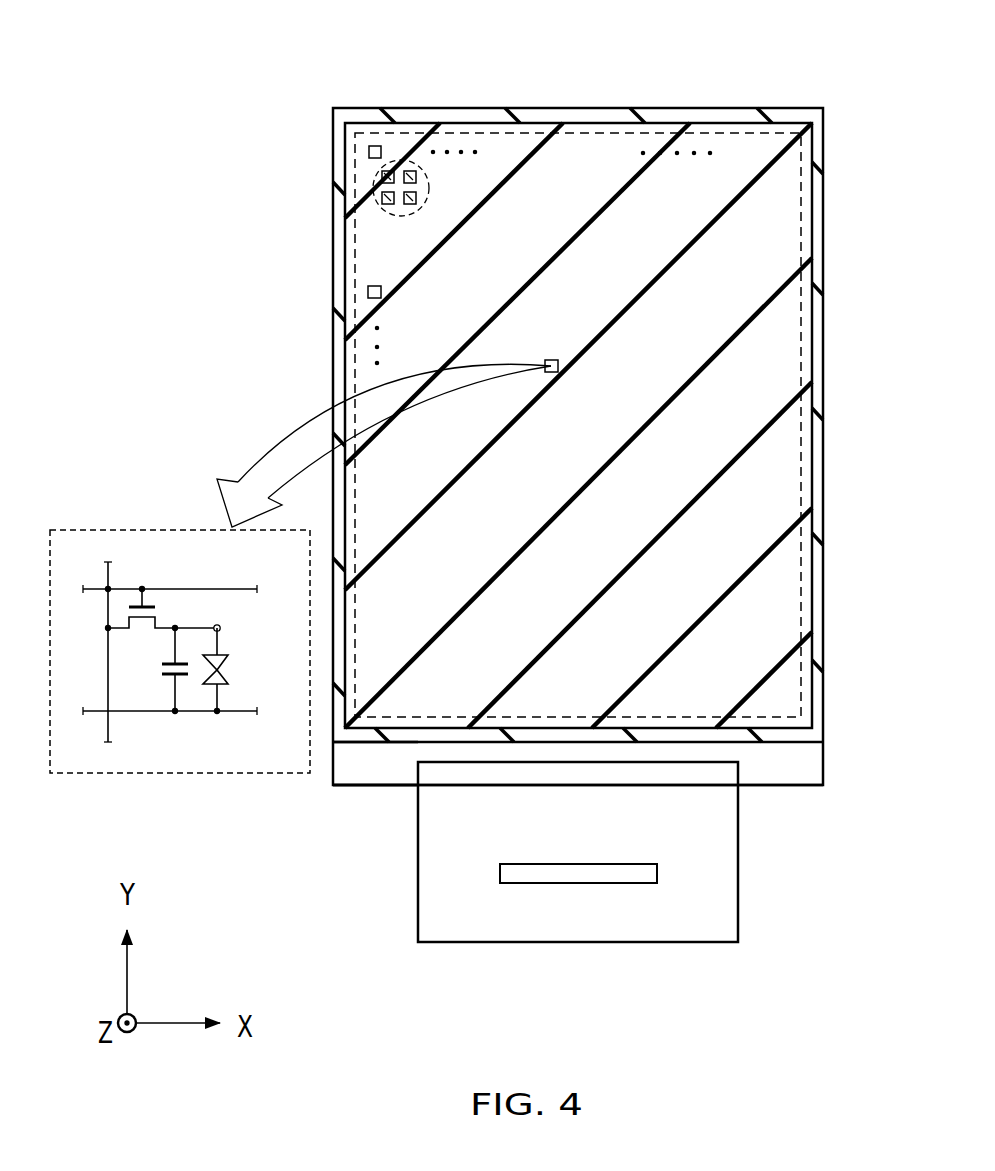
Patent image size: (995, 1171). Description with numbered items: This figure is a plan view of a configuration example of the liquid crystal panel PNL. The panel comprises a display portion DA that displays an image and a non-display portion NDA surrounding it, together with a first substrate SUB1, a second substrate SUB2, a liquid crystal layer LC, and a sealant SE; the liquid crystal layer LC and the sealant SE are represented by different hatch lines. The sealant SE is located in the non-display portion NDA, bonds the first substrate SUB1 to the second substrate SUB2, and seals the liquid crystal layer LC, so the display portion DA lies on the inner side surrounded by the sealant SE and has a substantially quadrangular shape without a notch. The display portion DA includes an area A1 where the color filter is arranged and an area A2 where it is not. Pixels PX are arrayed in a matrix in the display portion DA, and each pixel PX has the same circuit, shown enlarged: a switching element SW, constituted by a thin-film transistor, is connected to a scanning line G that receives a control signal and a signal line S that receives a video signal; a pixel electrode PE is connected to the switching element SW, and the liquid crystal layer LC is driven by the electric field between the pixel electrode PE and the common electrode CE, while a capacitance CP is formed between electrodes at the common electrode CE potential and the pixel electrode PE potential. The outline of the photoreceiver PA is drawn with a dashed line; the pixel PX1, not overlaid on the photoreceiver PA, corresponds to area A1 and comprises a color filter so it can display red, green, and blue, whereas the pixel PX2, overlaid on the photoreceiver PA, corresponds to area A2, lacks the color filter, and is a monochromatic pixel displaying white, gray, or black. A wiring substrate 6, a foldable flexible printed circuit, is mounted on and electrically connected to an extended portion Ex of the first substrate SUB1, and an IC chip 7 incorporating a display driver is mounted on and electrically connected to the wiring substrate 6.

The liquid crystal panel PNL is at (827, 372).
The first substrate SUB1 is at (815, 770).
The second substrate SUB2 is at (815, 678).
The extended portion Ex is at (353, 773).
The non-display portion NDA is at (807, 305).
The display portion DA is at (578, 57).
The area A1 is at (543, 132).
The area A2 is at (430, 183).
The sealant SE is at (813, 503).
The liquid crystal layer LC is at (790, 428).
The pixel PX is at (373, 145).
The pixel PX1 is at (373, 298).
The pixel PX2 is at (383, 177).
The photoreceiver PA is at (401, 218).
The wiring substrate 6 is at (738, 918).
The IC chip 7 is at (657, 873).
The scanning line G is at (95, 586).
The signal line S is at (107, 657).
The switching element SW is at (163, 618).
The pixel electrode PE is at (222, 627).
The capacitance CP is at (160, 672).
The common electrode CE is at (235, 712).